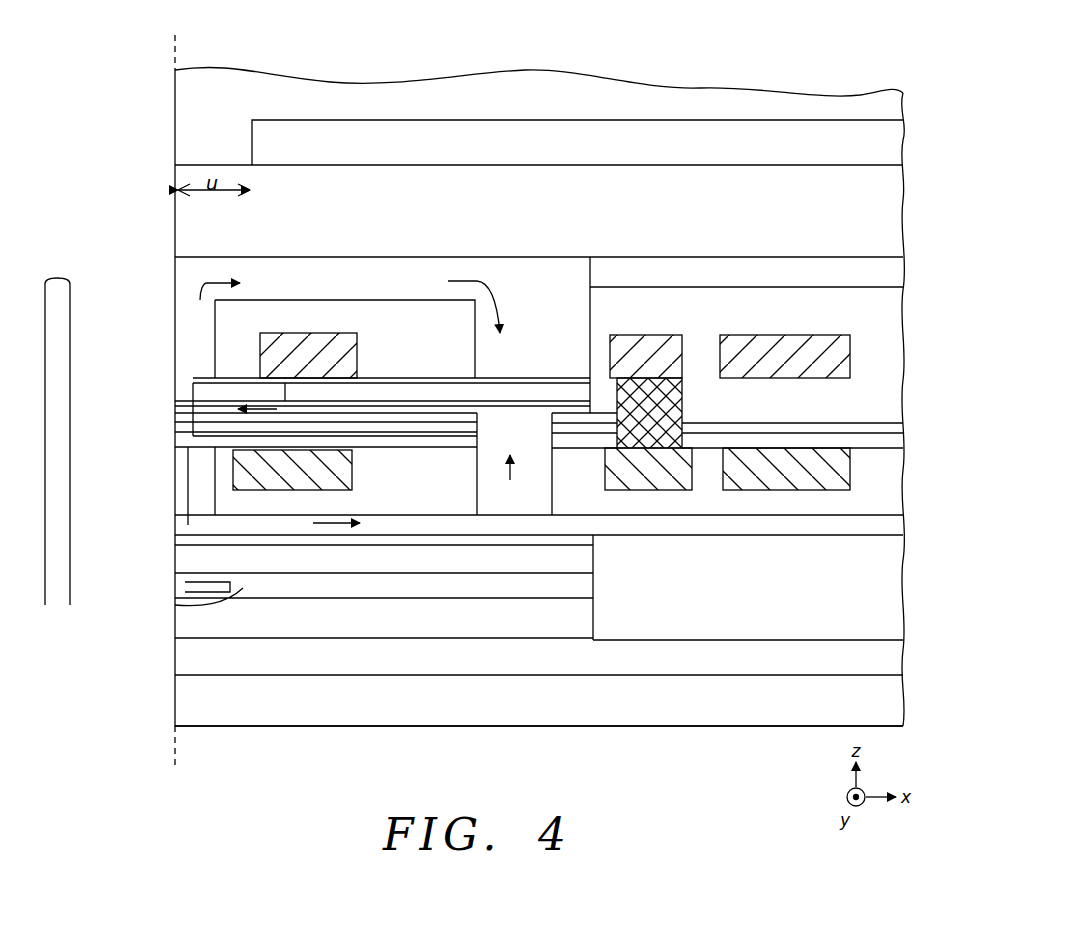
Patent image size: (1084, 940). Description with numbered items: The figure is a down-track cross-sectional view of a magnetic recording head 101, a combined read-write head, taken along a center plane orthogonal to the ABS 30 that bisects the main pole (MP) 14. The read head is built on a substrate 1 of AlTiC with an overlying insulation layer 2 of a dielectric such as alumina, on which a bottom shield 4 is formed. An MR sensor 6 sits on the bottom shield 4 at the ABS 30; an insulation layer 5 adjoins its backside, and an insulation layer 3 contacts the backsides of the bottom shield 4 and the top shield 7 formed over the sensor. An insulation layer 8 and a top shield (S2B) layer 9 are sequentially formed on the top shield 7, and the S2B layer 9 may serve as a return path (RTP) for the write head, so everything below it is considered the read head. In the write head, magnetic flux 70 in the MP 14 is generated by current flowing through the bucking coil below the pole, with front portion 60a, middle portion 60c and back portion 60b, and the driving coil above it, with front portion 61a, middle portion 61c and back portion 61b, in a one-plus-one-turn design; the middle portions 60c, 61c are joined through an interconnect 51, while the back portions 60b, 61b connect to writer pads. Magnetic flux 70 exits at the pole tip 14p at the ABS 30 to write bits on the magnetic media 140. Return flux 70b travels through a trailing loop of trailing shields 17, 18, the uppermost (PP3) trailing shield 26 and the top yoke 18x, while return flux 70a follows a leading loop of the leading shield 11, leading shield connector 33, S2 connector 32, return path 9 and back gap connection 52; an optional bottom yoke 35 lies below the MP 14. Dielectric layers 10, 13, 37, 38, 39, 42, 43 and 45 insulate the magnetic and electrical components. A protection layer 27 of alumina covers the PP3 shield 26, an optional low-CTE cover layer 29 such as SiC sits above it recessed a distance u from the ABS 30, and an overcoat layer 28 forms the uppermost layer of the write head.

The substrate 1 is at (187, 700).
The insulation layer 2 is at (187, 655).
The insulation layer 3 is at (887, 557).
The bottom shield 4 is at (187, 625).
The insulation layer 5 is at (187, 603).
The MR sensor 6 is at (187, 586).
The top shield 7 is at (187, 560).
The insulation layer 8 is at (187, 540).
The top shield (S2B) layer 9 is at (178, 527).
The dielectric layer 10 is at (180, 522).
The leading shield 11 is at (182, 427).
The dielectric layer 13 is at (182, 417).
The main pole 14 is at (547, 410).
The pole tip 14p is at (180, 400).
The trailing shield 17 is at (174, 406).
The trailing shield 18 is at (181, 390).
The top yoke 18x is at (525, 395).
The uppermost (PP3) trailing shield 26 is at (186, 277).
The protection layer 27 is at (186, 228).
The overcoat layer 28 is at (186, 120).
The cover layer 29 is at (890, 142).
The ABS 30 is at (172, 37).
The S2 connector (S2C) 32 is at (197, 458).
The leading shield connector (LSC) 33 is at (182, 443).
The bottom yoke 35 is at (410, 423).
The dielectric layer 37 is at (180, 494).
The dielectric layer 38 is at (420, 442).
The dielectric layer 39 is at (458, 430).
The dielectric layer 42 is at (207, 388).
The dielectric layer 43 is at (228, 380).
The dielectric layer 45 is at (232, 330).
The interconnect 51 is at (677, 395).
The back gap connection (BGC) 52 is at (527, 497).
The bucking coil front portion 60a is at (258, 483).
The bucking coil back portion 60b is at (765, 483).
The bucking coil middle portion 60c is at (645, 483).
The driving coil front portion 61a is at (288, 340).
The driving coil back portion 61b is at (843, 348).
The driving coil middle portion 61c is at (652, 347).
The magnetic flux 70 is at (270, 411).
The magnetic flux (leading return) 70a is at (333, 527).
The magnetic flux (trailing return) 70b is at (108, 383).
The magnetic recording head 101 is at (93, 134).
The magnetic media 140 is at (48, 608).